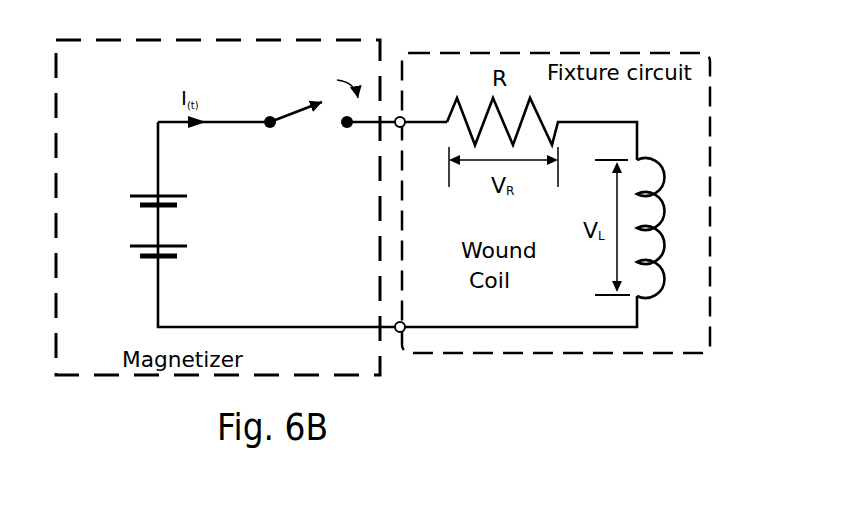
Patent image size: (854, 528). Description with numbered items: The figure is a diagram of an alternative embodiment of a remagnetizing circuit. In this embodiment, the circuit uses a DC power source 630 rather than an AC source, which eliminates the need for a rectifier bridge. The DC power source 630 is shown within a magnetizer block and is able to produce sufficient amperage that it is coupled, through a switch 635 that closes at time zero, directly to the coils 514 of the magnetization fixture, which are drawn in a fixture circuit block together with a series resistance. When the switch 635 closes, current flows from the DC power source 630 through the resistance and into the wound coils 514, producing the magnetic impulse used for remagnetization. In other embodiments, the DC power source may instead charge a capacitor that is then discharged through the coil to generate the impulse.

The DC power source 630 is at (122, 236).
The switch 635 is at (276, 93).
The coils 514 is at (672, 284).